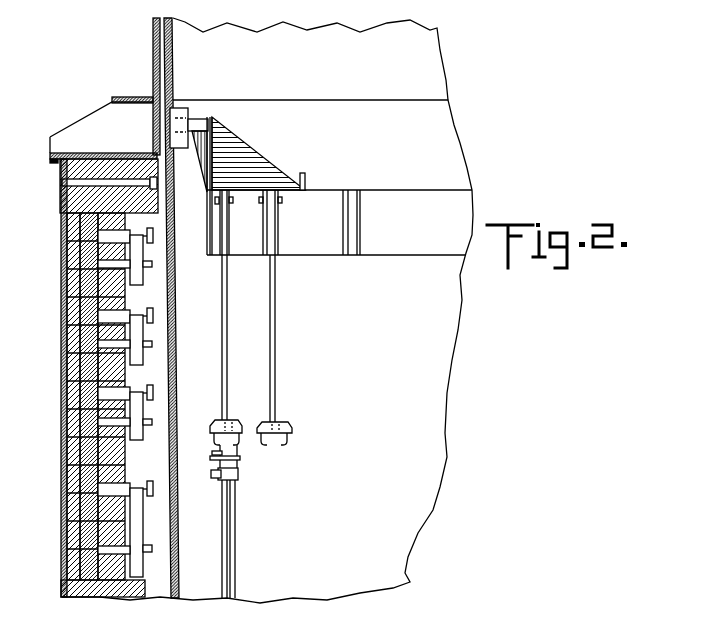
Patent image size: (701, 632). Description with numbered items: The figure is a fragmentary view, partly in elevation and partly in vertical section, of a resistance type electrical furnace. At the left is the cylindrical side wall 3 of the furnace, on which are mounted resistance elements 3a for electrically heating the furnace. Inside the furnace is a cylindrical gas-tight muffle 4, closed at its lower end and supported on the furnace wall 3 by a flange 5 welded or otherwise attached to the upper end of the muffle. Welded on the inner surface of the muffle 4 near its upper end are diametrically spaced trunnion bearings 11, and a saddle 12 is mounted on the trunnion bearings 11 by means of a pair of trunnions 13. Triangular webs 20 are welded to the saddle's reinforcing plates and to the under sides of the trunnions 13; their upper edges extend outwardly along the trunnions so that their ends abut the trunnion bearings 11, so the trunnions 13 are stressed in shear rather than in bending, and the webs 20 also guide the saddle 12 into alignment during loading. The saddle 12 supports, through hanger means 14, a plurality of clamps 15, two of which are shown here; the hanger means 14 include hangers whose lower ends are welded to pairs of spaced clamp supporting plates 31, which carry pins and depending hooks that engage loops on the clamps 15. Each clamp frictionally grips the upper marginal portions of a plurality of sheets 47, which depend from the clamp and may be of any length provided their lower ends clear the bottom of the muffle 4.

The cylindrical side wall 3 is at (62, 335).
The resistance elements 3a is at (149, 273).
The gas-tight muffle 4 is at (176, 333).
The flange 5 is at (130, 97).
The trunnion bearings 11 is at (179, 150).
The saddle 12 is at (343, 168).
The trunnions 13 is at (198, 119).
The hanger means 14 is at (228, 324).
The clamps 15 is at (196, 446).
The triangular webs 20 is at (197, 178).
The clamp supporting plates 31 is at (232, 420).
The sheets 47 is at (222, 529).